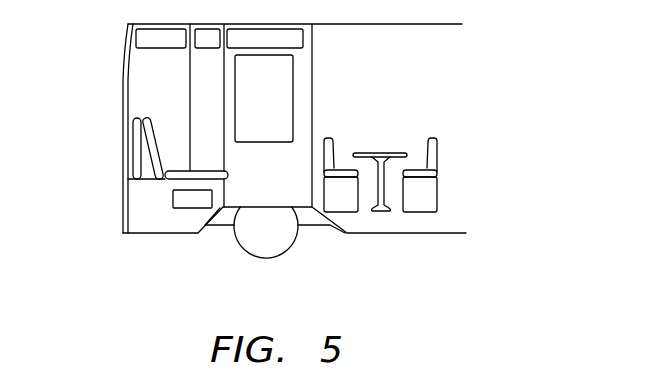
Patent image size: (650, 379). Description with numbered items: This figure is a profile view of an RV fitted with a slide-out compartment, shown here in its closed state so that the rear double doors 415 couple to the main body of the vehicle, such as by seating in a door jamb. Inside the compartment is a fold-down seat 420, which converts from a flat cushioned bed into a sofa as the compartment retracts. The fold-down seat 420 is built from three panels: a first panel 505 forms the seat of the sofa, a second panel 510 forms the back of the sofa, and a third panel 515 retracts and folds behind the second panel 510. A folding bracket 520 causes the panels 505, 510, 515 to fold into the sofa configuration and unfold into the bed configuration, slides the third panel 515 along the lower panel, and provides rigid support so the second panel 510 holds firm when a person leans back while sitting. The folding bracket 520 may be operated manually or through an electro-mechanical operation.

The rear double doors 415 is at (123, 68).
The fold-down seat 420 is at (198, 150).
The first panel 505 is at (185, 180).
The second panel 510 is at (152, 167).
The third panel 515 is at (129, 133).
The folding bracket 520 is at (129, 153).